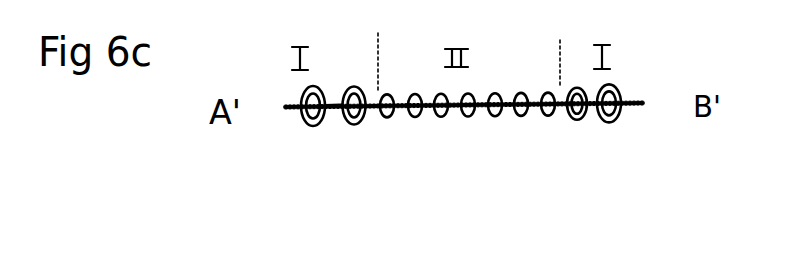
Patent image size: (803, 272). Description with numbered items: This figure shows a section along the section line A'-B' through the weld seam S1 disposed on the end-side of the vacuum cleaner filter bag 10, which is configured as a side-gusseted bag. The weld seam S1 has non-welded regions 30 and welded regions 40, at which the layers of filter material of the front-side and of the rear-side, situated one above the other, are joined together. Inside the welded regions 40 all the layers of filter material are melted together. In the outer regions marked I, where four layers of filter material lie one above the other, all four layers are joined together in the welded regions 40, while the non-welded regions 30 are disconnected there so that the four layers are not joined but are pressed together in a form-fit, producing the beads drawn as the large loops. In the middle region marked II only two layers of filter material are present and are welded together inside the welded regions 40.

The vacuum cleaner filter bag 10 is at (357, 70).
The non-welded regions 30 is at (315, 136).
The welded regions 40 is at (334, 128).
The weld seam S1 is at (548, 138).